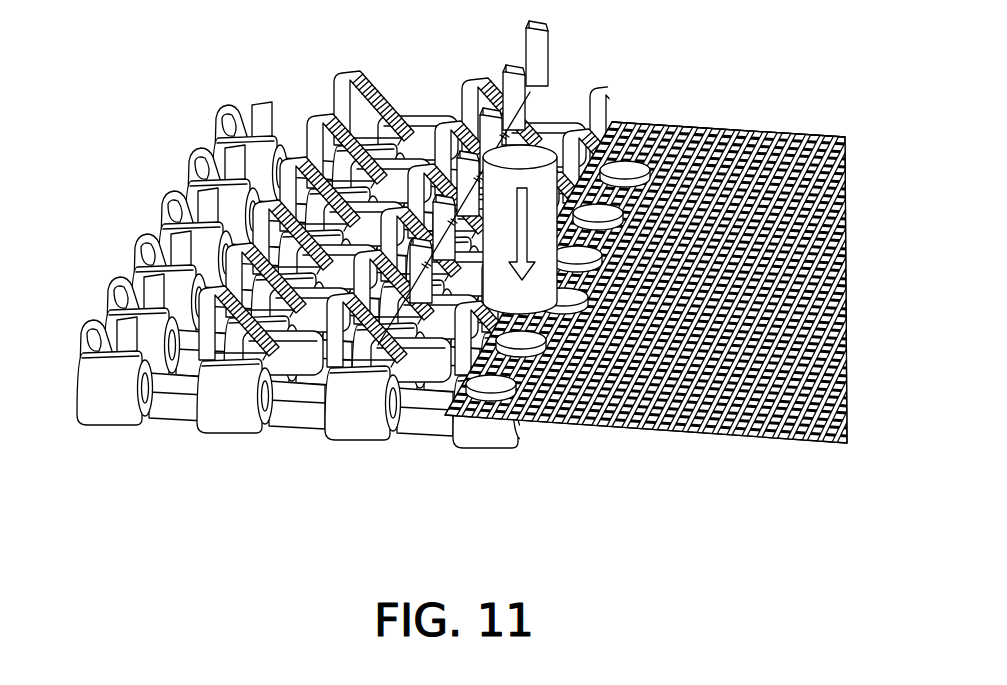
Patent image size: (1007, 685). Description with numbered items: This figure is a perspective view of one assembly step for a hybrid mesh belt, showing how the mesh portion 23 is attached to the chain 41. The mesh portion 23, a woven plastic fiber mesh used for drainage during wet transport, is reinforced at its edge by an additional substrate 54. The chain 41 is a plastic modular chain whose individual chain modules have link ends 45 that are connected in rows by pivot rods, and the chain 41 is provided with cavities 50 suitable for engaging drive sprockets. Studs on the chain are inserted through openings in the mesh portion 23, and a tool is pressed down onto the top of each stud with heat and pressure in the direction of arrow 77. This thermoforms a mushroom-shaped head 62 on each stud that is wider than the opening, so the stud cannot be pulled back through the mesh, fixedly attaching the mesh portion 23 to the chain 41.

The mesh portion 23 is at (813, 134).
The chain 41 is at (212, 212).
The link ends 45 is at (223, 417).
The cavities 50 is at (453, 137).
The additional substrate 54 is at (700, 127).
The mushroom-shaped head 62 is at (592, 206).
The arrow 77 is at (520, 215).